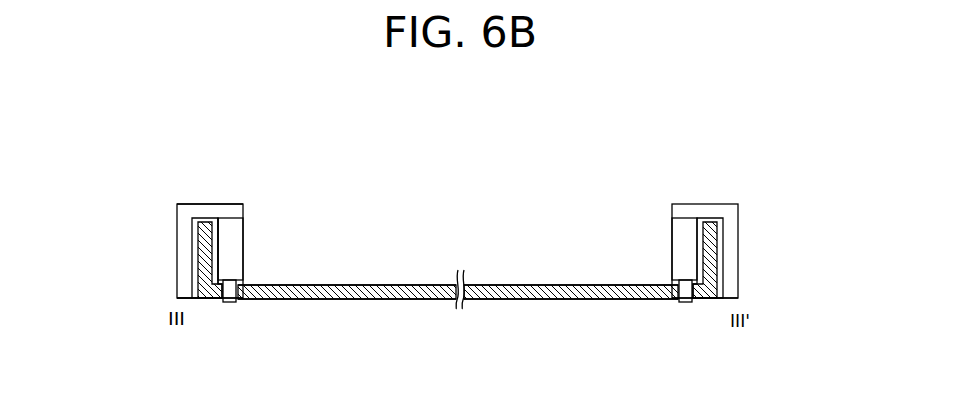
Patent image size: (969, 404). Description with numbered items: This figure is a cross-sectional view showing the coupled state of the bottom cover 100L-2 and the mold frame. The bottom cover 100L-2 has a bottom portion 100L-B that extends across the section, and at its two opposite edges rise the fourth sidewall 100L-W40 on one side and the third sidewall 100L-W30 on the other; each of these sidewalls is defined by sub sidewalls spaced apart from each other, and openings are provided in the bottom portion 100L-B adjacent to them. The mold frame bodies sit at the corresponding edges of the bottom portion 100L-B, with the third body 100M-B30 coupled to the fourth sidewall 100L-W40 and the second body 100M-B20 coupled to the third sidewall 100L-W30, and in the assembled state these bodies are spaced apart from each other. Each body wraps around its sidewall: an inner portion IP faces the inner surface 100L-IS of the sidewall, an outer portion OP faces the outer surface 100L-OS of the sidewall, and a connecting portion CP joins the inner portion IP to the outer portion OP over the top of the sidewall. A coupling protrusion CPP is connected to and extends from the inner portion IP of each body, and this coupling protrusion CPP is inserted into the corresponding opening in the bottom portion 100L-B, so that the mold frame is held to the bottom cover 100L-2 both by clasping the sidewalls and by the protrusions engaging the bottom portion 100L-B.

The third body 100M-B30 is at (178, 186).
The second body 100M-B20 is at (737, 186).
The connecting portion CP is at (231, 204).
The fourth sidewall 100L-W40 is at (204, 237).
The third sidewall 100L-W30 is at (712, 237).
The inner surface 100L-IS is at (219, 233).
The inner portion IP is at (237, 262).
The outer surface 100L-OS is at (196, 266).
The outer portion OP is at (183, 287).
The coupling protrusion CPP is at (229, 302).
The bottom portion 100L-B is at (565, 299).
The bottom cover 100L-2 is at (404, 318).